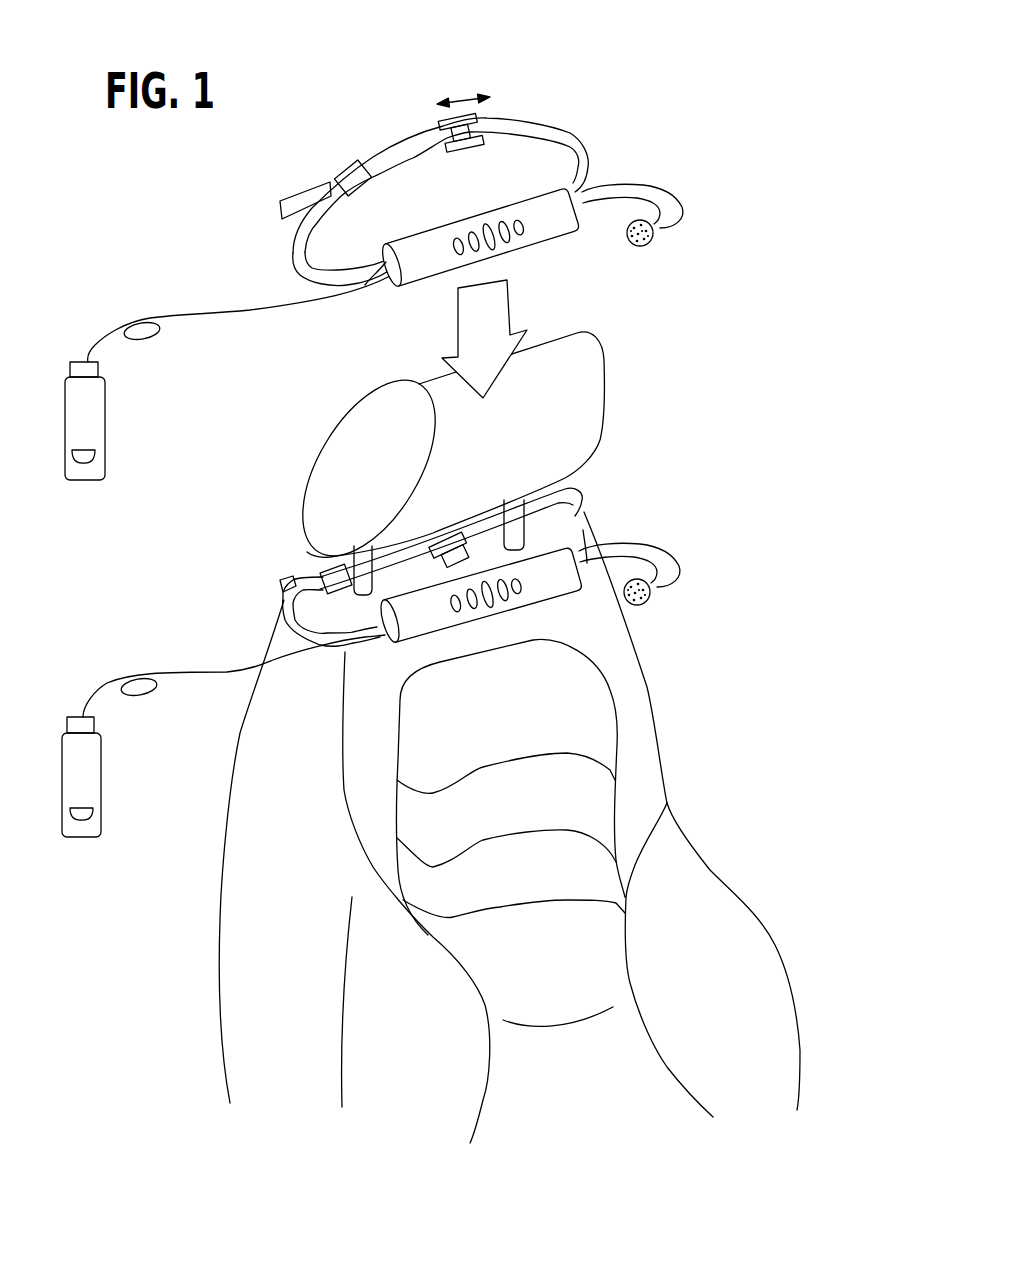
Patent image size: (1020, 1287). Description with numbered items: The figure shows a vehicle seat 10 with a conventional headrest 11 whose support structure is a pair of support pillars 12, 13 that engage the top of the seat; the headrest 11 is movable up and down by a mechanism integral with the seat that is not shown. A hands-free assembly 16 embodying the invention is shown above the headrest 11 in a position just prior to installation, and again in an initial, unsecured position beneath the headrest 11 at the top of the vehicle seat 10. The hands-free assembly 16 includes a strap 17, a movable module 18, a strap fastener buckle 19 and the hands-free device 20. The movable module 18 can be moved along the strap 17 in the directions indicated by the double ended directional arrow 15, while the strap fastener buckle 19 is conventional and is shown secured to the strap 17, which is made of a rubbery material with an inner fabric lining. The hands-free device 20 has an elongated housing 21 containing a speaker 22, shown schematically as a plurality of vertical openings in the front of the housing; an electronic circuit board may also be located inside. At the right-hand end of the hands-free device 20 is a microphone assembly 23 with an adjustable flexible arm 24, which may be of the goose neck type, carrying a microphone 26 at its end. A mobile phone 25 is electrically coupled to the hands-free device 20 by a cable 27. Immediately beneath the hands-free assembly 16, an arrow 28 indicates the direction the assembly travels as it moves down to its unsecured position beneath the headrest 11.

The vehicle seat 10 is at (672, 667).
The headrest 11 is at (577, 427).
The support pillar 12 is at (520, 522).
The support pillar 13 is at (363, 560).
The double ended directional arrow 15 is at (468, 93).
The hands-free assembly 16 is at (632, 141).
The strap 17 is at (530, 123).
The movable module 18 is at (440, 126).
The strap fastener buckle 19 is at (342, 160).
The hands-free device 20 is at (387, 300).
The elongated housing 21 is at (513, 420).
The speaker 22 is at (500, 250).
The microphone assembly 23 is at (693, 389).
The adjustable flexible arm 24 is at (670, 223).
The mobile phone 25 is at (105, 407).
The microphone 26 is at (643, 247).
The cable 27 is at (185, 312).
The arrow 28 is at (465, 330).